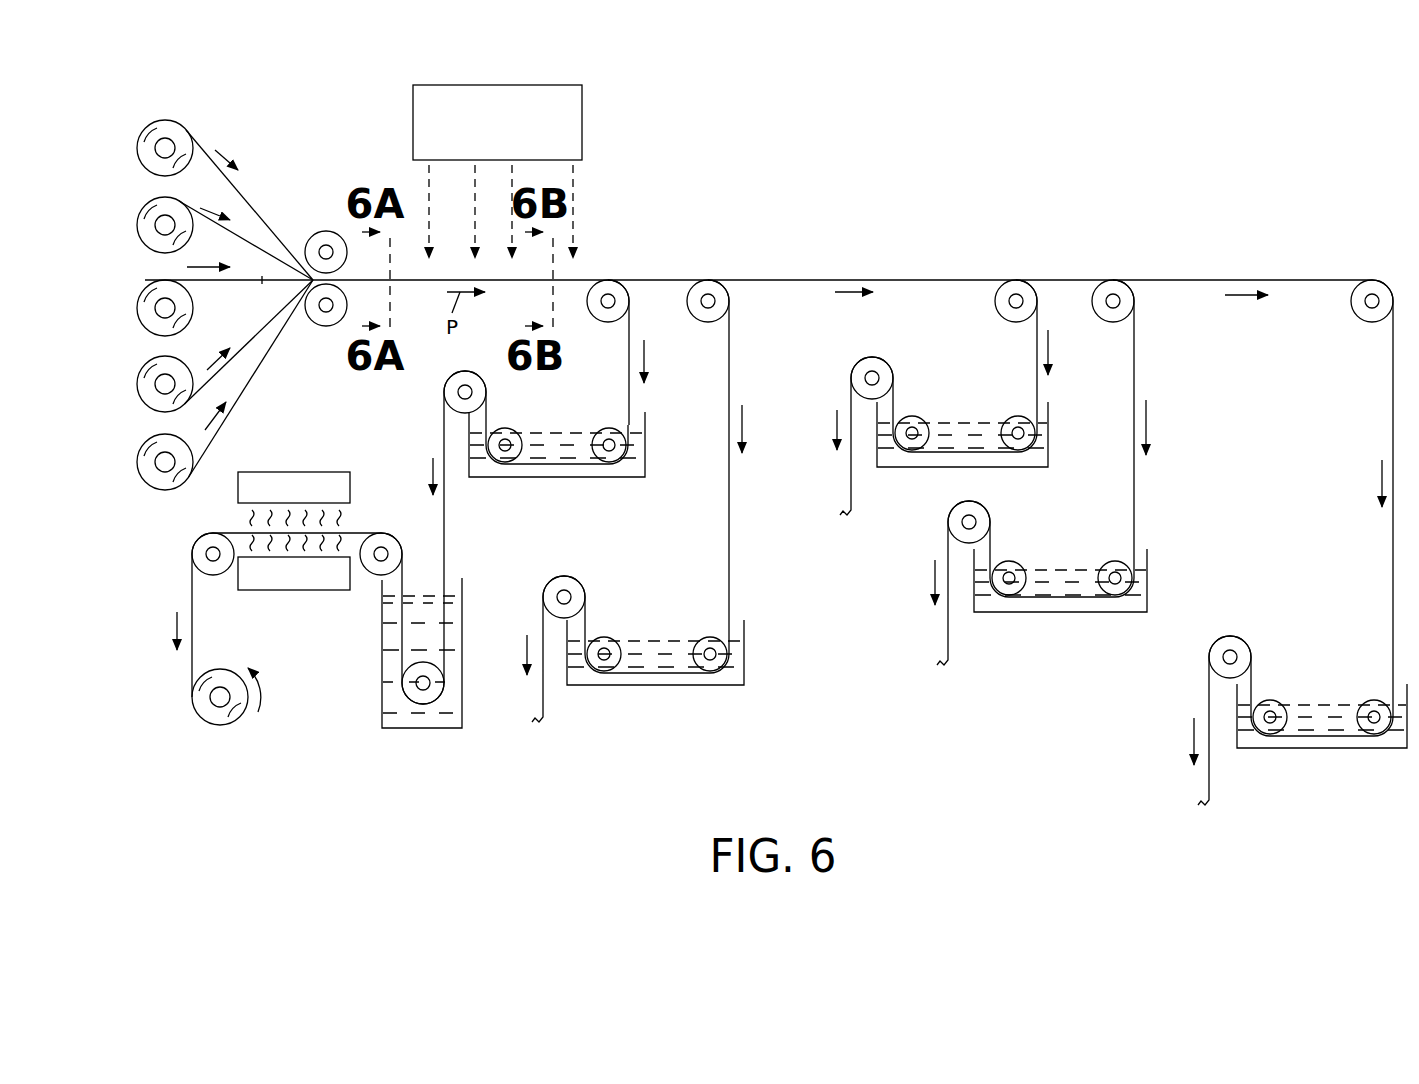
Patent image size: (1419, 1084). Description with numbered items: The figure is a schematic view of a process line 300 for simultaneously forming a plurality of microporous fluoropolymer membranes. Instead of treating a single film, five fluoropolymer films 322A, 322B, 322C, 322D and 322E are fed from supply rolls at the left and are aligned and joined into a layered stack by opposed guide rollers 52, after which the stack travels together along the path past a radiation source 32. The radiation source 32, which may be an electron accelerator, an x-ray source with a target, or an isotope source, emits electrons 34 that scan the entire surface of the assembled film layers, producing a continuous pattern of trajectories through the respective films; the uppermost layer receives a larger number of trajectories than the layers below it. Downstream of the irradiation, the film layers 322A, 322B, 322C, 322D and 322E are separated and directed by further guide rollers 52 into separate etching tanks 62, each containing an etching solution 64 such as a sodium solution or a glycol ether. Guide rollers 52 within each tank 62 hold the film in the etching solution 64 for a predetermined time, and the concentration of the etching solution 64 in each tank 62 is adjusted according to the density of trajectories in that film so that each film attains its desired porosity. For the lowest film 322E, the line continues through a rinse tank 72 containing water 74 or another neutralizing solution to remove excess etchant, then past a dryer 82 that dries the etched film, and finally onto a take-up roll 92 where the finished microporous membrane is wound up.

The process line 300 is at (1060, 92).
The radiation source 32 is at (412, 118).
The electrons 34 is at (475, 227).
The guide rollers 52 is at (328, 231).
The tank 62 is at (646, 455).
The etching solution 64 is at (557, 432).
The rinse tank 72 is at (382, 665).
The water 74 is at (452, 620).
The dryer 82 is at (287, 593).
The take-up roll 92 is at (213, 718).
The fluoropolymer film 322A is at (205, 152).
The fluoropolymer film 322B is at (240, 237).
The fluoropolymer film 322C is at (262, 280).
The fluoropolymer film 322D is at (243, 348).
The fluoropolymer film 322E is at (233, 407).